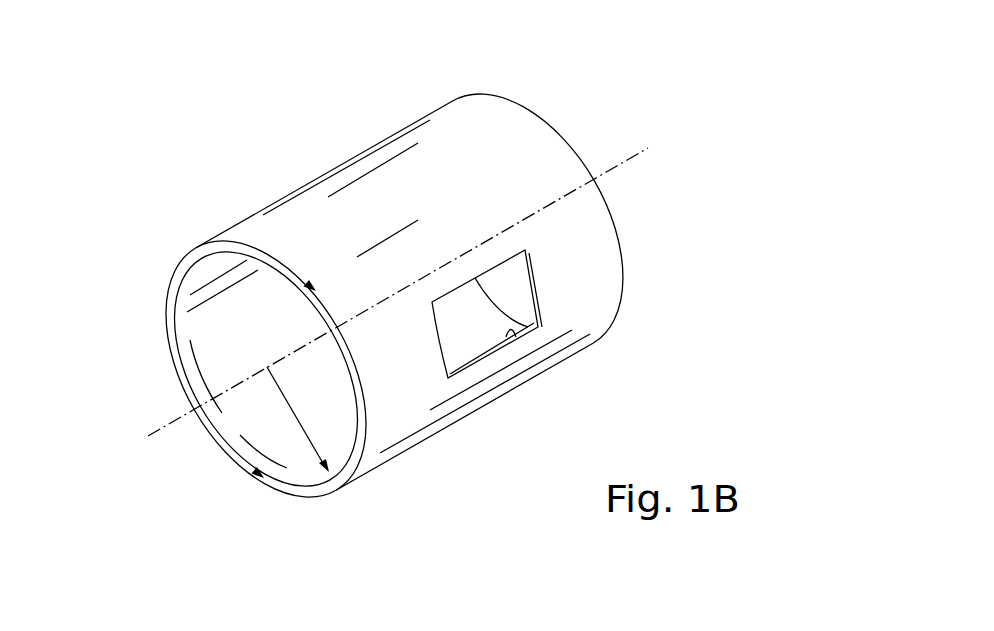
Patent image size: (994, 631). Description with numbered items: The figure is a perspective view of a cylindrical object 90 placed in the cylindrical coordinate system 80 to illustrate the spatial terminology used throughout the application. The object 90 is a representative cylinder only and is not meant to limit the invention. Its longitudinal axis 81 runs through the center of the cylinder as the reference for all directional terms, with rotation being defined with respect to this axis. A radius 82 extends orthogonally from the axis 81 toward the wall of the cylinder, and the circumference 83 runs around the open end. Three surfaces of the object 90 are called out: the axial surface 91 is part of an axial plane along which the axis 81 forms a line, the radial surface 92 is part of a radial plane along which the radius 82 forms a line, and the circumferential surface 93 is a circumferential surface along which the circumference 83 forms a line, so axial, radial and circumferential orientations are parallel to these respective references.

The cylindrical coordinate system 80 is at (359, 274).
The object 90 is at (428, 86).
The circumference 83 is at (175, 271).
The radial surface 92 is at (283, 481).
The circumferential surface 93 is at (372, 188).
The axial surface 91 is at (512, 328).
The longitudinal axis 81 is at (163, 431).
The radius 82 is at (301, 424).